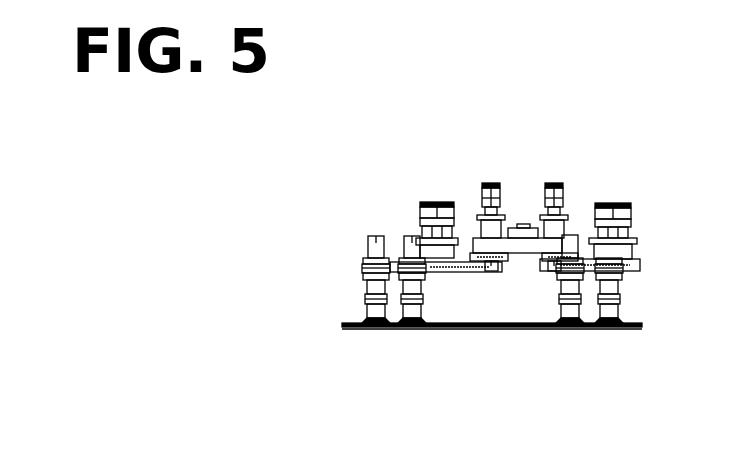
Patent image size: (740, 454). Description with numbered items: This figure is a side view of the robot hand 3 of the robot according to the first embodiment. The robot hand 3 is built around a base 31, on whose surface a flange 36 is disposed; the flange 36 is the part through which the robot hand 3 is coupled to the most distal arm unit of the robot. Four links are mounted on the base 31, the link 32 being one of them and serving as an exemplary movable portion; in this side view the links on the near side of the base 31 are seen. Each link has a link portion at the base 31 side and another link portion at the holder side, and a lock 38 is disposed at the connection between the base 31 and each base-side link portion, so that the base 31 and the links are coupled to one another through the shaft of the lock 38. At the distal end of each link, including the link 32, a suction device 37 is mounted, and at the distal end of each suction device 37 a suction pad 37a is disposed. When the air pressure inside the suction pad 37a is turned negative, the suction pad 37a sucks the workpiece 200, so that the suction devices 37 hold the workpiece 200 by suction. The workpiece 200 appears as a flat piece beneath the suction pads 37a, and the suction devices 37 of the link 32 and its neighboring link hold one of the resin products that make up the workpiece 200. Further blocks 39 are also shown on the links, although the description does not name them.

The robot hand 3 is at (590, 118).
The base 31 is at (503, 238).
The link 32 is at (470, 272).
The flange 36 is at (525, 226).
The suction device 37 is at (604, 172).
The suction pad 37a is at (378, 329).
The lock 38 is at (490, 183).
The fixing block 39 is at (433, 202).
The workpiece 200 is at (347, 328).